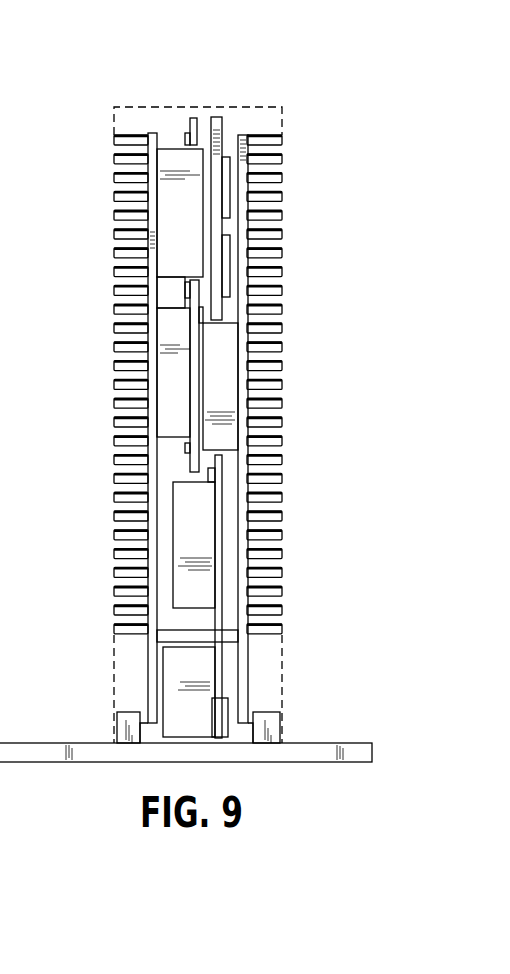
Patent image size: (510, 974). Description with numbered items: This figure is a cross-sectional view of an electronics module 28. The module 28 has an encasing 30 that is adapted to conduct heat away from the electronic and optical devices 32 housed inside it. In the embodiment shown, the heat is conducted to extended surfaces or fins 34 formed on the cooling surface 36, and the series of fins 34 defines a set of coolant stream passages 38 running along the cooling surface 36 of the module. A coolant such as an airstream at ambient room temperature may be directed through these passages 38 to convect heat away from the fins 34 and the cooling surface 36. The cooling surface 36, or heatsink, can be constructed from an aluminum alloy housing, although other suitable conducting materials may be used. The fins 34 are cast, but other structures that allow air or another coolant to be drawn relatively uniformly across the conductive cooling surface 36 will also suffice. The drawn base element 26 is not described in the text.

The base plate 26 is at (0, 627).
The module 28 is at (295, 165).
The encasing 30 is at (150, 127).
The electronic and optical devices 32 is at (222, 372).
The fins 34 is at (283, 557).
The cooling surface 36 is at (147, 652).
The coolant stream passage 38 is at (115, 342).